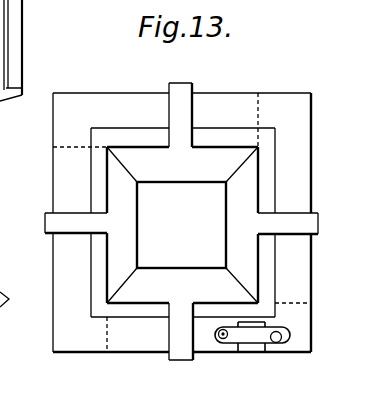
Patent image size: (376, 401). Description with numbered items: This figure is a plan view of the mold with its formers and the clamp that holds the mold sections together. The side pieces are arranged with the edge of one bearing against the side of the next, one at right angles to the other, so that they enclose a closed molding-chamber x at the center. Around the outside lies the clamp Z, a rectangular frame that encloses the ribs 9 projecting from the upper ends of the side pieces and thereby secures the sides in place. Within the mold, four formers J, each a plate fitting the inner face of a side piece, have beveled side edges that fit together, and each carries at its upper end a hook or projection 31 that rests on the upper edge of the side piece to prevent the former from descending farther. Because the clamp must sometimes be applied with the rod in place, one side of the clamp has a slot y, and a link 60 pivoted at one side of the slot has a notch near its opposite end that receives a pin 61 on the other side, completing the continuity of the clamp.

The clamp Z is at (281, 100).
The ribs 9 is at (322, 273).
The formers J is at (182, 225).
The molding-chamber x is at (181, 225).
The hook or projection 31 is at (176, 370).
The slot y is at (249, 347).
The link 60 is at (233, 340).
The pin 61 is at (276, 345).